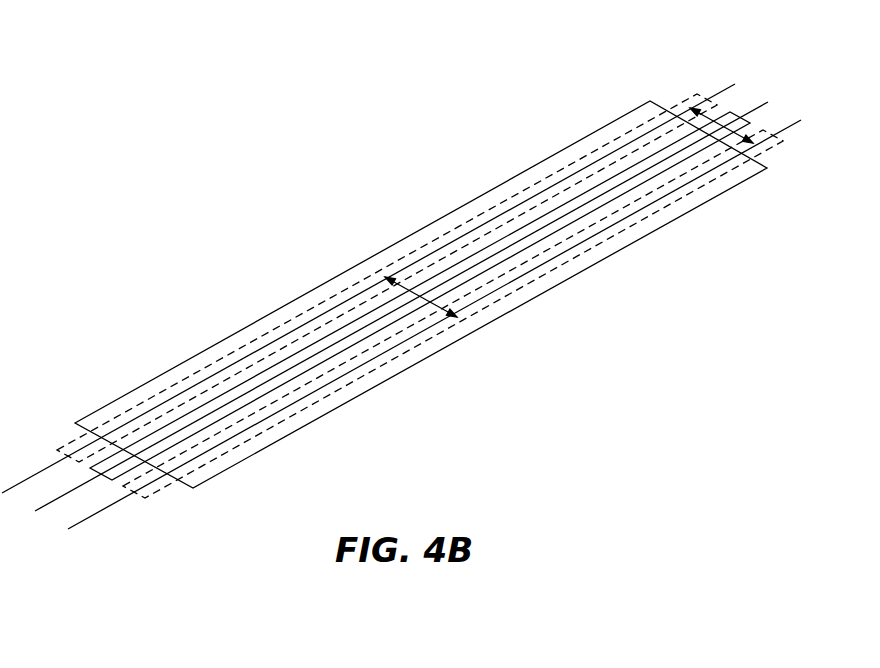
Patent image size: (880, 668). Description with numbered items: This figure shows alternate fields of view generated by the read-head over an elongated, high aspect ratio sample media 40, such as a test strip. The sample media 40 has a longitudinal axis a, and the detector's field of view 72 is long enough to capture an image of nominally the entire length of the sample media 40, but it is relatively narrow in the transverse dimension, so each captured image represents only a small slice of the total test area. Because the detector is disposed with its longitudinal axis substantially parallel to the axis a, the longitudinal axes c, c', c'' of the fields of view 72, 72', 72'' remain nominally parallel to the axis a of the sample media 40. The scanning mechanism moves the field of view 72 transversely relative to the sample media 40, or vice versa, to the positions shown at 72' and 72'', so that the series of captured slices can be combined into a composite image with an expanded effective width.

The sample media 40 is at (327, 282).
The field of view 72 is at (406, 270).
The field of view 72' is at (368, 261).
The field of view 72'' is at (440, 324).
The longitudinal axis c is at (32, 466).
The longitudinal axis a is at (50, 503).
The longitudinal axis c' is at (621, 79).
The longitudinal axis c'' is at (722, 212).